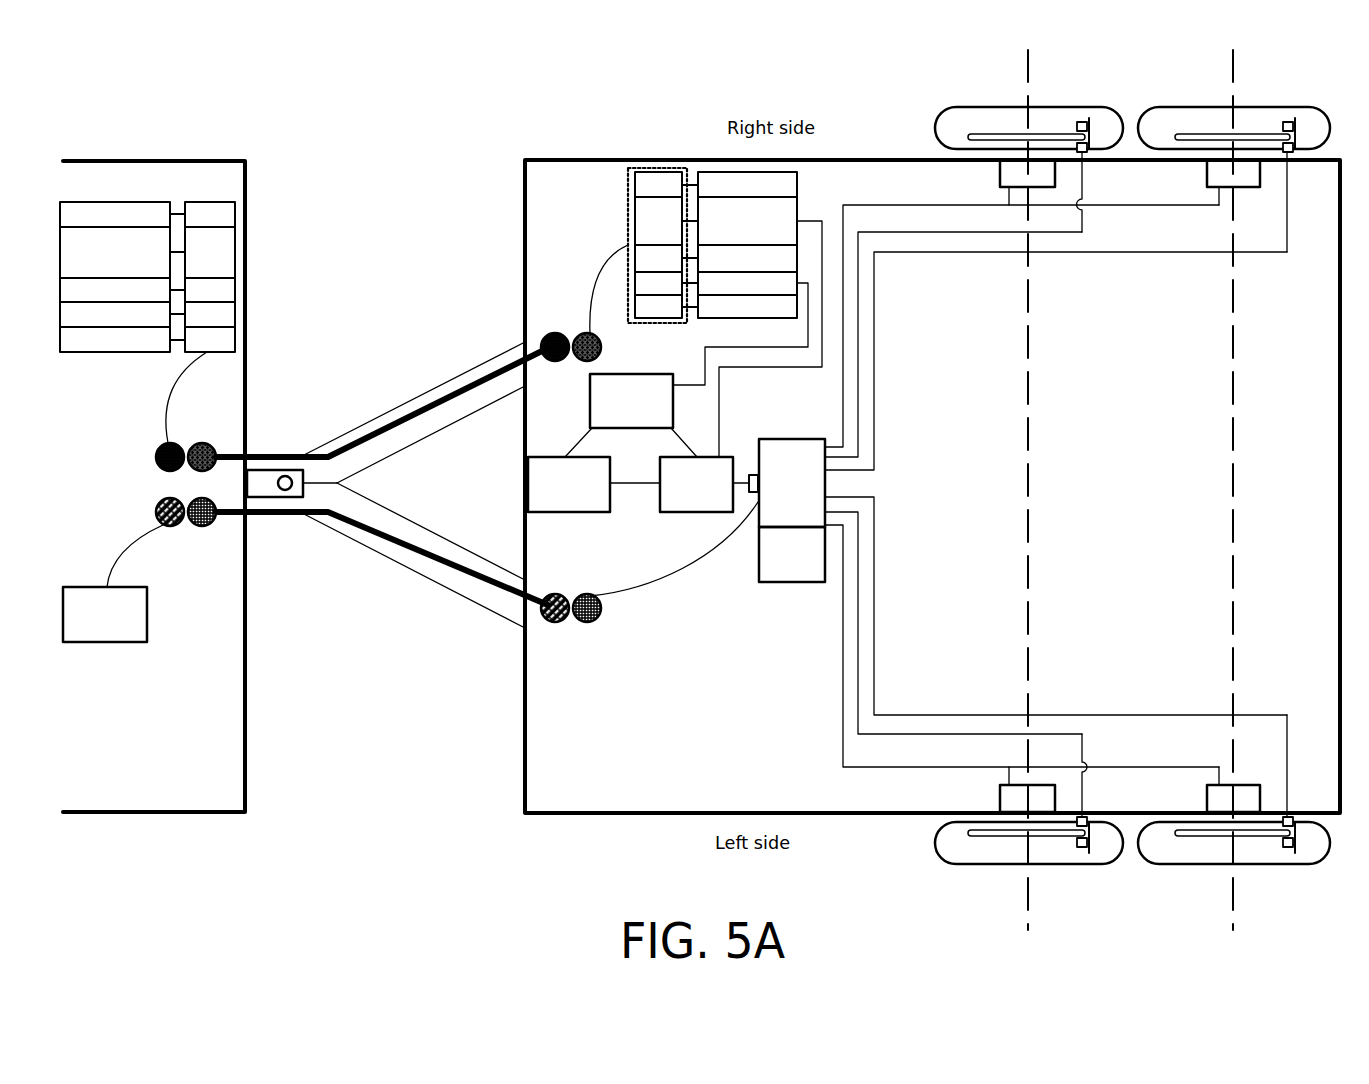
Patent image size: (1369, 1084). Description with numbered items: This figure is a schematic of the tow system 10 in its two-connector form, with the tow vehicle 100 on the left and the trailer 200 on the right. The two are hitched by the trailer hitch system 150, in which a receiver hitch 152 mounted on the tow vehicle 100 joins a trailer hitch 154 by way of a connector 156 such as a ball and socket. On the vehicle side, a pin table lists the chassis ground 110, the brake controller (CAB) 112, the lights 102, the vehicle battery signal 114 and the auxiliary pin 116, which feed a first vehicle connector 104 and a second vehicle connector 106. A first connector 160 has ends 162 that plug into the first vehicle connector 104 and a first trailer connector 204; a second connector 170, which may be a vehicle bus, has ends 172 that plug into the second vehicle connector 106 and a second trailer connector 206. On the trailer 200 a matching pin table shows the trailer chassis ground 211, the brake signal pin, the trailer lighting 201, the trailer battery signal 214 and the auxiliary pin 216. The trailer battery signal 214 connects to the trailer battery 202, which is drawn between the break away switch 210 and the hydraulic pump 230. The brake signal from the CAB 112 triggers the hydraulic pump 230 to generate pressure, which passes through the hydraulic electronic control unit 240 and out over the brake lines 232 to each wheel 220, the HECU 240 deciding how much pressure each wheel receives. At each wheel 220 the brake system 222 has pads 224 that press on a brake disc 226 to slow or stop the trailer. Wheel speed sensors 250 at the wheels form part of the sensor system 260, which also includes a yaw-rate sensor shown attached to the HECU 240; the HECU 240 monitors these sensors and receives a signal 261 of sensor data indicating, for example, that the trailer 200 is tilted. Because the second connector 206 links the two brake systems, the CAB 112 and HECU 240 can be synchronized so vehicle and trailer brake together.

The tow system 10 is at (350, 100).
The tow vehicle 100 is at (185, 194).
The chassis ground 110 is at (115, 214).
The lights 102 is at (119, 290).
The vehicle battery signal 114 is at (115, 315).
The auxiliary pin 116 is at (115, 340).
The first vehicle connector 104 is at (156, 456).
The second vehicle connector 106 is at (156, 512).
The vehicle brake controller 112 is at (88, 635).
The ends of the first connector 162 is at (406, 358).
The ends of the second connector 172 is at (381, 595).
The trailer hitch system 150 is at (525, 658).
The receiver hitch 152 is at (250, 486).
The trailer hitch 154 is at (410, 394).
The connector 156 is at (340, 484).
The first connector 160 is at (363, 440).
The second connector 170 is at (360, 526).
The trailer 200 is at (585, 194).
The trailer lighting 201 is at (710, 245).
The trailer chassis ground 211 is at (747, 185).
The trailer battery signal 214 is at (740, 330).
The auxiliary pin 216 is at (747, 308).
The first trailer connector 204 is at (602, 347).
The second trailer connector 206 is at (602, 608).
The trailer battery 202 is at (615, 425).
The break away switch 210 is at (552, 508).
The hydraulic pump 230 is at (713, 508).
The hydraulic electronic control unit 240 is at (777, 508).
The sensor system 260 is at (777, 577).
The signal 261 is at (878, 206).
The brake lines 232 is at (1056, 483).
The wheel speed sensor 250 is at (1013, 185).
The wheel 220 is at (1116, 493).
The brake system 222 is at (1316, 876).
The pads 224 is at (1076, 122).
The brake disc 226 is at (988, 132).